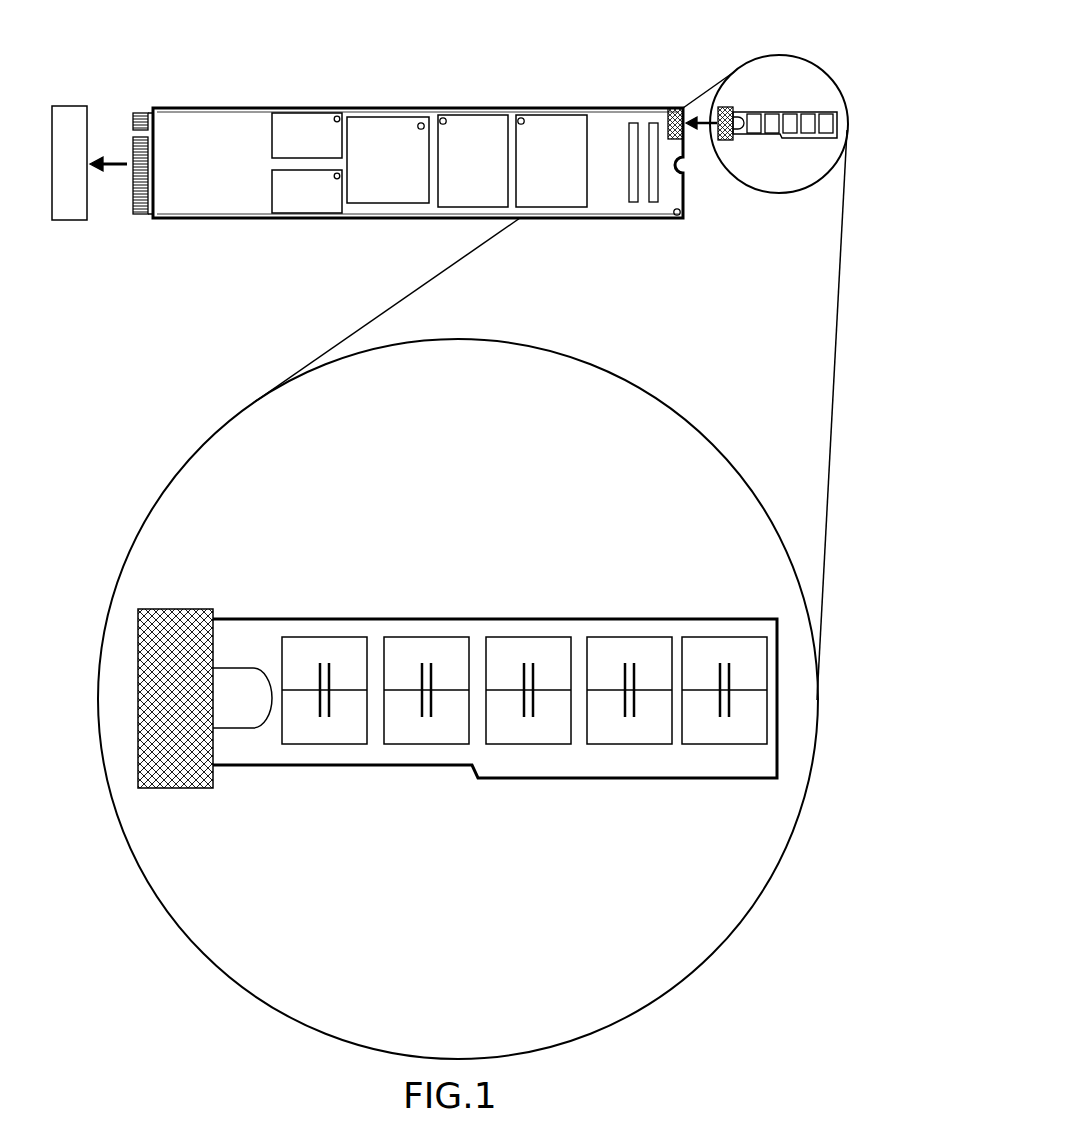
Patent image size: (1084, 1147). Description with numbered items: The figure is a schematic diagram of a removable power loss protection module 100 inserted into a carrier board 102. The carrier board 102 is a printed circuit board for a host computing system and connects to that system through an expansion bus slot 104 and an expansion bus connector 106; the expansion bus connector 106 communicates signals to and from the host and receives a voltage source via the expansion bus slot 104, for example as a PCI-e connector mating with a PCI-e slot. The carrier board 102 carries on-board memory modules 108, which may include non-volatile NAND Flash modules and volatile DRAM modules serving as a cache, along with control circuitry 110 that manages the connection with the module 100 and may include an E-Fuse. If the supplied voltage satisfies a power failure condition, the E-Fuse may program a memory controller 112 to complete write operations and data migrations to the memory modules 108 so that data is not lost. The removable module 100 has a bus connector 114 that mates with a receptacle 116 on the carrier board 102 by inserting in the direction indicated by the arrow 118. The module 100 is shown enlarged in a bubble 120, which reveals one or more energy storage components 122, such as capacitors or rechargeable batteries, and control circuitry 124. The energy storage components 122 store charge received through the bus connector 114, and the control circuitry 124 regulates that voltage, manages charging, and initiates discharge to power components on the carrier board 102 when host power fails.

The removable power loss protection module 100 is at (743, 138).
The carrier board 102 is at (257, 108).
The expansion bus slot 104 is at (68, 106).
The expansion bus connector 106 is at (144, 215).
The on-board memory modules 108 is at (502, 161).
The control circuitry 110 is at (307, 191).
The memory controller 112 is at (307, 135).
The bus connector 114 is at (722, 107).
The receptacle 116 is at (678, 108).
The arrow 118 is at (706, 121).
The bubble 120 is at (768, 56).
The energy storage components 122 is at (720, 637).
The control circuitry 124 is at (241, 728).